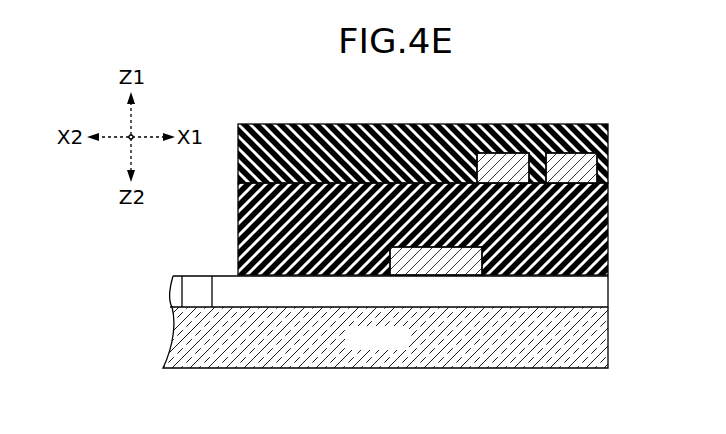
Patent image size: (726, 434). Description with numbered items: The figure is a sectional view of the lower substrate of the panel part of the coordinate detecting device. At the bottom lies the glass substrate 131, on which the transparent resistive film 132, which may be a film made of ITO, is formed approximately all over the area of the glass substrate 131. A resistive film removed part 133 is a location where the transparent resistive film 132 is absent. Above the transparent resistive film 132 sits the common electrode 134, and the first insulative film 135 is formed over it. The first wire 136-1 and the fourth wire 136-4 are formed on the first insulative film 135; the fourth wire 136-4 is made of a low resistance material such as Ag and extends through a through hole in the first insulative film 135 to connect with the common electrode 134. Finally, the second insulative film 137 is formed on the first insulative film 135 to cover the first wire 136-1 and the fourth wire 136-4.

The glass substrate 131 is at (608, 326).
The transparent resistive film 132 is at (608, 285).
The resistive film removed part 133 is at (193, 283).
The common electrode 134 is at (486, 249).
The first insulative film 135 is at (608, 190).
The first wire 136-1 is at (589, 140).
The fourth wire 136-4 is at (502, 140).
The second insulative film 137 is at (608, 134).